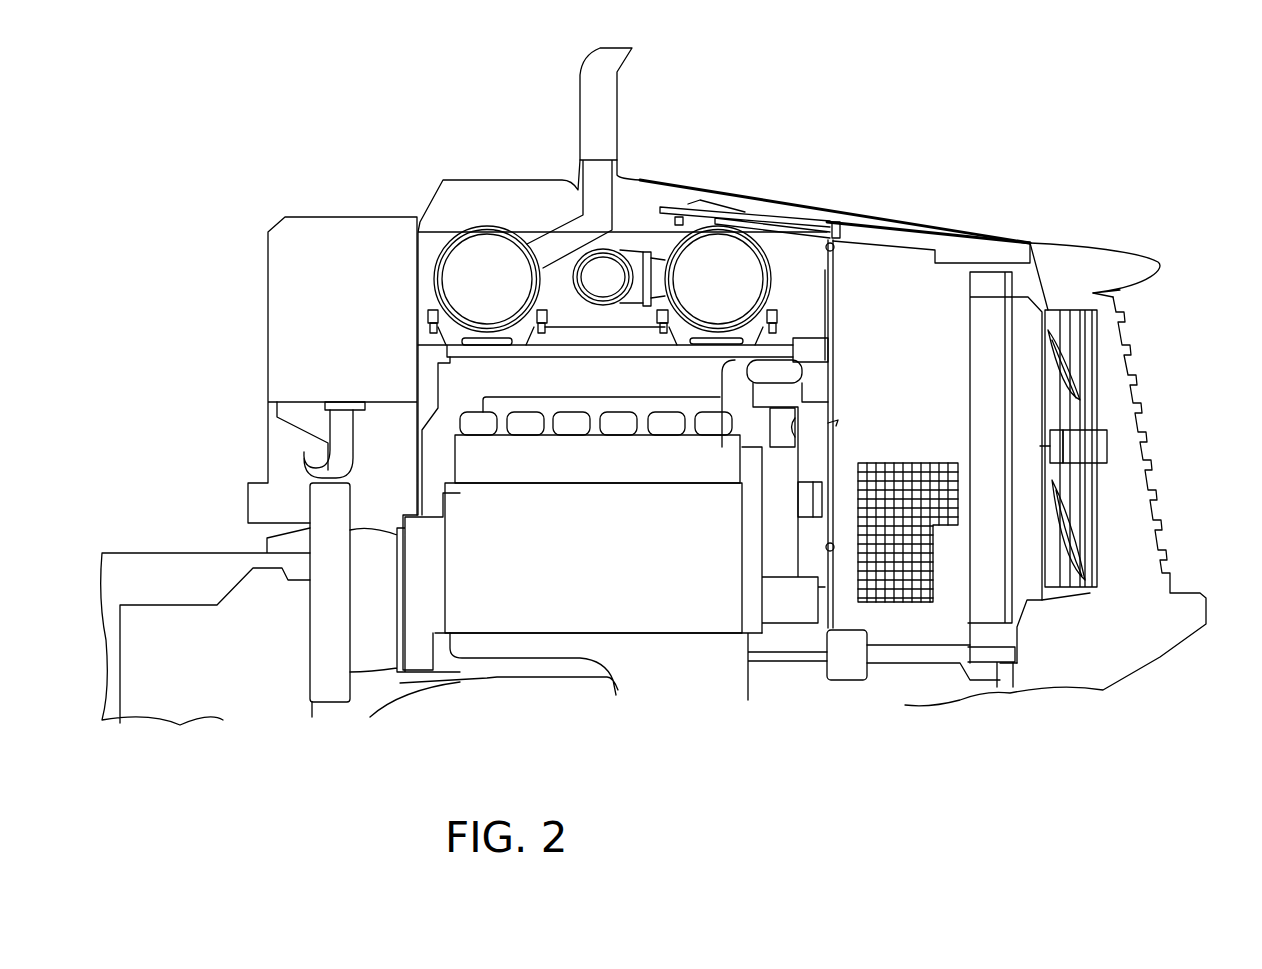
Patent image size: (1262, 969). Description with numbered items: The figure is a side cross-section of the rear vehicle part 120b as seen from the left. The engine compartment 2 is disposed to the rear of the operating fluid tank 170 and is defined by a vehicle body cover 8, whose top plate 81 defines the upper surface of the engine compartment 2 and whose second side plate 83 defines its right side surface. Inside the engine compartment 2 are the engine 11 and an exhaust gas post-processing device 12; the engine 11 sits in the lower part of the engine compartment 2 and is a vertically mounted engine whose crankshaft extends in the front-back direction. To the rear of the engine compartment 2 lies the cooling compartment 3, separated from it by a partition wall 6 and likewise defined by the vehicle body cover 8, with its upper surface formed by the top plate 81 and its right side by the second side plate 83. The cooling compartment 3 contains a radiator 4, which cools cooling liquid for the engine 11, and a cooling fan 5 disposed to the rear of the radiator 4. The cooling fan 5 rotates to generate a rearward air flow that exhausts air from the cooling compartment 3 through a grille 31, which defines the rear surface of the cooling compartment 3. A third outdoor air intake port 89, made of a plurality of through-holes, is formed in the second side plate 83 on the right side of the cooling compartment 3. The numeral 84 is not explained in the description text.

The operating fluid tank 170 is at (315, 232).
The exhaust gas post-processing device 12 is at (487, 200).
The rear vehicle part 120b is at (537, 128).
The engine compartment 2 is at (629, 231).
The top plate 81 is at (677, 187).
The vehicle body cover 8 is at (856, 211).
The hood panel 84 is at (892, 227).
The cooling compartment 3 is at (915, 285).
The radiator 4 is at (990, 297).
The cooling fan 5 is at (1087, 383).
The grille 31 is at (1147, 427).
The third outdoor air intake port 89 is at (933, 558).
The engine 11 is at (655, 607).
The partition wall 6 is at (830, 387).
The second side plate 83 is at (927, 623).